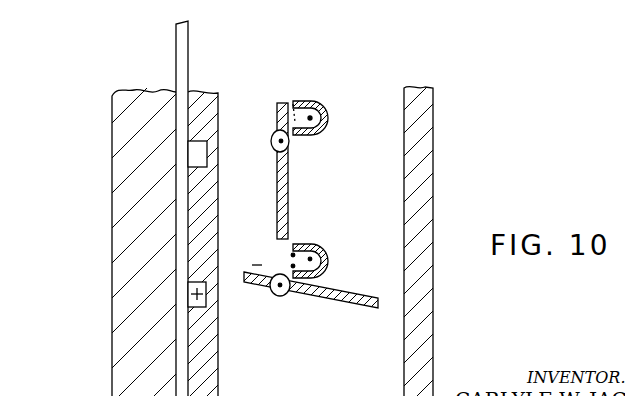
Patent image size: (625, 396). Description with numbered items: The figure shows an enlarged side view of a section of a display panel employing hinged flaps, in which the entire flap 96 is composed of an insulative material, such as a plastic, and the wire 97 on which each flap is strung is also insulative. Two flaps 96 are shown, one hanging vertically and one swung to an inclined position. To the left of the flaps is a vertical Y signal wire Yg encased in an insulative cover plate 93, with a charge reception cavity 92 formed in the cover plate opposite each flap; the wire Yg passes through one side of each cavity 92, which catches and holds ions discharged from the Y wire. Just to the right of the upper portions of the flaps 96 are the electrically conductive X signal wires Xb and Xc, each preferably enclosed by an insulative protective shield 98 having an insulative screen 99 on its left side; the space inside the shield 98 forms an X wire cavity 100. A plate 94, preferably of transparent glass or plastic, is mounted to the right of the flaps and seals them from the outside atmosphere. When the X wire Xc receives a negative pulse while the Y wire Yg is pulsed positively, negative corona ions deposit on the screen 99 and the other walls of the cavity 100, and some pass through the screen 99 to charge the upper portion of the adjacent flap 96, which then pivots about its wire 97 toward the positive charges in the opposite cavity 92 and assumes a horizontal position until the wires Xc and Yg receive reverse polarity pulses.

The cavity 92 is at (194, 154).
The plastic cover plate 93 is at (98, 374).
The plate 94 is at (435, 112).
The flap 96 is at (288, 182).
The wire 97 is at (279, 143).
The insulative protective shield 98 is at (302, 102).
The insulative screen 99 is at (293, 104).
The X wire cavity 100 is at (312, 124).
The Y signal wire Yg is at (177, 43).
The X signal wire Xb is at (322, 110).
The X signal wire Xc is at (322, 253).